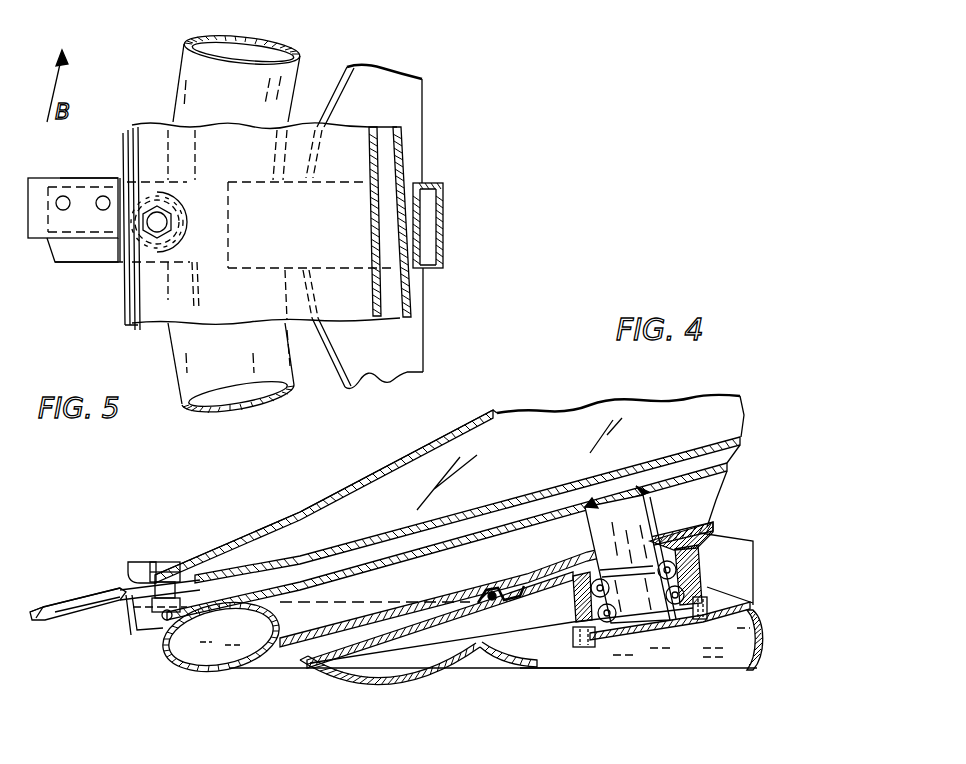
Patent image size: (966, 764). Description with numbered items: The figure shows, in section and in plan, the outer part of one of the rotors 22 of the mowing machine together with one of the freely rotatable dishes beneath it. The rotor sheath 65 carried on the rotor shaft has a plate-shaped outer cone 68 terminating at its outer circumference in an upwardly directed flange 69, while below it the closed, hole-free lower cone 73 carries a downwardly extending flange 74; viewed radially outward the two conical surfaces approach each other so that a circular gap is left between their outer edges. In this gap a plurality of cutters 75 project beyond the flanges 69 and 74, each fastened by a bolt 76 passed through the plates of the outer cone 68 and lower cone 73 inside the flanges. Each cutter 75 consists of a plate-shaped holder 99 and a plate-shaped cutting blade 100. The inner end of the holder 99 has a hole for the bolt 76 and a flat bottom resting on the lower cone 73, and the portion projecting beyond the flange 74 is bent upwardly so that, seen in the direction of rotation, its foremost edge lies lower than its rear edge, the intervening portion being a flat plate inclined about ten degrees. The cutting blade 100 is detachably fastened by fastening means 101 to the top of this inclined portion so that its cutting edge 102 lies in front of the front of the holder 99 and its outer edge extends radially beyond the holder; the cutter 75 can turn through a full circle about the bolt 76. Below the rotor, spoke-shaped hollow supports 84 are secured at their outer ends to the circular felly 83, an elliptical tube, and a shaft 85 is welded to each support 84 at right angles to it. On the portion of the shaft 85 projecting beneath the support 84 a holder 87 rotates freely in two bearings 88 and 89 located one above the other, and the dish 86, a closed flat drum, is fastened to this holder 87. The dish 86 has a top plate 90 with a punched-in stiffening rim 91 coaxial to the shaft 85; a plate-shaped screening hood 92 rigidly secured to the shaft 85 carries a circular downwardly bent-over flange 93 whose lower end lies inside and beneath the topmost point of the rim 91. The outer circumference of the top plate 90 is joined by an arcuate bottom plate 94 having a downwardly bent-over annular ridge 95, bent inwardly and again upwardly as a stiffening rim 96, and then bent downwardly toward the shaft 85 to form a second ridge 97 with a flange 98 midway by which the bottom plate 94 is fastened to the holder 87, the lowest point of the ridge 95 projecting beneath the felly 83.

In FIG. 5, the rotor 22 is at (125, 108).
In FIG. 4, the rotor 22 is at (548, 393).
In FIG. 4, the rotor sheath 65 is at (383, 462).
In FIG. 5, the outer cone 68 is at (300, 128).
In FIG. 4, the outer cone 68 is at (315, 498).
In FIG. 5, the flange 69 is at (136, 326).
In FIG. 4, the flange 69 is at (130, 562).
In FIG. 5, the lower cone 73 is at (396, 148).
In FIG. 4, the lower cone 73 is at (378, 540).
In FIG. 5, the flange 74 is at (124, 320).
In FIG. 4, the flange 74 is at (134, 633).
In FIG. 5, the cutter 75 is at (73, 264).
In FIG. 4, the cutter 75 is at (97, 592).
In FIG. 5, the bolt 76 is at (172, 216).
In FIG. 4, the bolt 76 is at (170, 560).
In FIG. 5, the felly 83 is at (278, 68).
In FIG. 4, the felly 83 is at (182, 662).
In FIG. 5, the support 84 is at (445, 216).
In FIG. 4, the support 84 is at (455, 514).
In FIG. 4, the shaft 85 is at (610, 506).
In FIG. 5, the dish 86 is at (423, 337).
In FIG. 4, the dish 86 is at (325, 681).
In FIG. 4, the holder 87 is at (580, 604).
In FIG. 4, the bearing 88 is at (683, 525).
In FIG. 4, the bearing 89 is at (703, 573).
In FIG. 5, the top plate 90 is at (420, 92).
In FIG. 4, the top plate 90 is at (397, 627).
In FIG. 4, the stiffening rim 91 is at (480, 624).
In FIG. 4, the screening hood 92 is at (522, 572).
In FIG. 4, the flange 93 is at (483, 588).
In FIG. 4, the bottom plate 94 is at (420, 678).
In FIG. 4, the ridge 95 is at (382, 684).
In FIG. 4, the stiffening rim 96 is at (483, 663).
In FIG. 4, the second ridge 97 is at (549, 670).
In FIG. 4, the flange 98 is at (708, 606).
In FIG. 5, the holder 99 is at (92, 264).
In FIG. 4, the holder 99 is at (90, 608).
In FIG. 5, the cutting blade 100 is at (38, 195).
In FIG. 4, the cutting blade 100 is at (40, 608).
In FIG. 5, the fastening means 101 is at (63, 210).
In FIG. 5, the cutting edge 102 is at (96, 180).
In FIG. 4, the cutting edge 102 is at (40, 623).